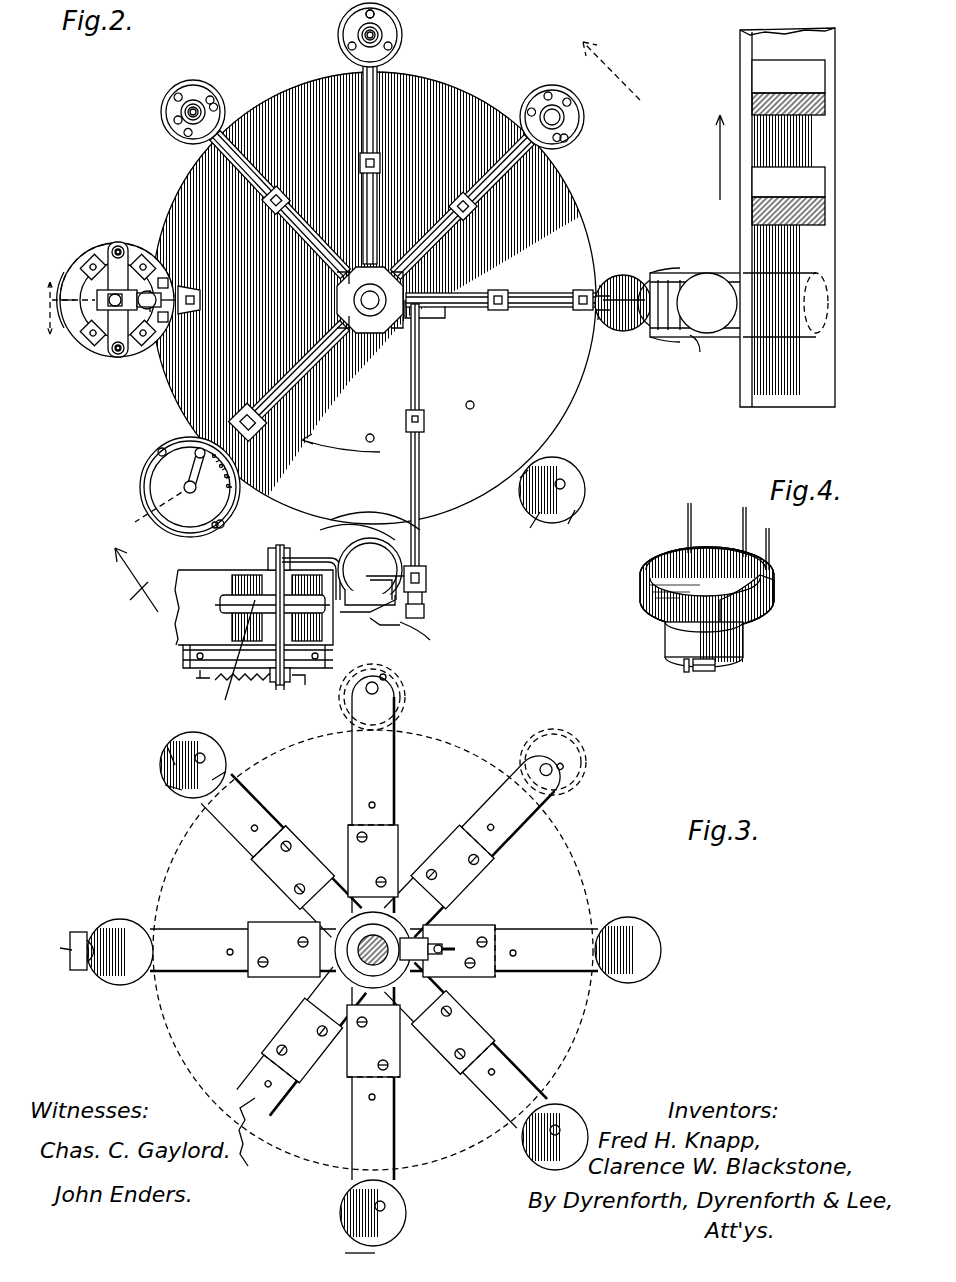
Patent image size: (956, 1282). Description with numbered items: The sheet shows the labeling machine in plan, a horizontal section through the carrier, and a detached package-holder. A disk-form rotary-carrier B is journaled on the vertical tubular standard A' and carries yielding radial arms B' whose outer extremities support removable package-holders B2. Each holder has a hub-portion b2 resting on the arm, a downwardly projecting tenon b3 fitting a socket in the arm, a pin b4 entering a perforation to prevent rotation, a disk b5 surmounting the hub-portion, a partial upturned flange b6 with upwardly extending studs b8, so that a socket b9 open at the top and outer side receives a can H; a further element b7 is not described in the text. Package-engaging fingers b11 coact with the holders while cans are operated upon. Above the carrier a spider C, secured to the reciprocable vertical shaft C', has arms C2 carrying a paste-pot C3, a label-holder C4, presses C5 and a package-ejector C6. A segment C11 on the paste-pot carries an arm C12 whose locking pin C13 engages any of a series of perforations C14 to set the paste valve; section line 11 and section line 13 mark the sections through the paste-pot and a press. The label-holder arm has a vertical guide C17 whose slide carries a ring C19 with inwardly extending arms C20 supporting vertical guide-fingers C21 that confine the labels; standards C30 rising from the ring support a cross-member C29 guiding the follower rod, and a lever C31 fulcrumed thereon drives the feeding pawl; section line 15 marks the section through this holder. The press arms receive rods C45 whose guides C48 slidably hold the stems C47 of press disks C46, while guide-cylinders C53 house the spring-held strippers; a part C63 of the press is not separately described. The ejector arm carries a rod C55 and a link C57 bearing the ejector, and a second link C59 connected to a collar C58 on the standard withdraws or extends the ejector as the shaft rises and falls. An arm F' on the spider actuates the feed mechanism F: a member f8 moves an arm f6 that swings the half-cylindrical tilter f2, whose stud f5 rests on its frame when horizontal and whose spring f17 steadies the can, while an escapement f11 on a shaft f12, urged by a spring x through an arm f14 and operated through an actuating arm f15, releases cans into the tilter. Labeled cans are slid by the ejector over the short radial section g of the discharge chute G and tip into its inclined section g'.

In FIG. 2, the rotary-carrier B is at (357, 297).
In FIG. 3, the rotary-carrier B is at (373, 928).
In FIG. 2, the radial arm B' is at (400, 524).
In FIG. 3, the radial arm B' is at (374, 927).
In FIG. 2, the package-holder B2 is at (376, 540).
In FIG. 4, the package-holder B2 is at (729, 584).
In FIG. 3, the package-holder B2 is at (172, 894).
In FIG. 2, the spider C is at (370, 274).
In FIG. 2, the reciprocable vertical shaft C' is at (356, 260).
In FIG. 3, the reciprocable vertical shaft C' is at (383, 907).
In FIG. 2, the spider arm C2 is at (445, 215).
In FIG. 2, the paste-pot C3 is at (148, 478).
In FIG. 2, the label-holder C4 is at (100, 352).
In FIG. 2, the press C5 is at (190, 80).
In FIG. 2, the package-ejector C6 is at (648, 285).
In FIG. 2, the segment C11 is at (228, 516).
In FIG. 2, the arm C12 is at (195, 452).
In FIG. 2, the locking pin C13 is at (238, 425).
In FIG. 2, the perforations C14 is at (240, 475).
In FIG. 2, the vertical guide C17 is at (200, 294).
In FIG. 2, the ring C19 is at (80, 262).
In FIG. 2, the inwardly extending arms C20 is at (152, 262).
In FIG. 2, the guide-fingers C21 is at (82, 296).
In FIG. 2, the cross-member C29 is at (148, 258).
In FIG. 2, the standards C30 is at (118, 246).
In FIG. 2, the lever C31 is at (165, 304).
In FIG. 2, the rod C45 is at (255, 178).
In FIG. 2, the press disk C46 is at (172, 100).
In FIG. 2, the stem C47 is at (182, 110).
In FIG. 2, the guide C48 is at (185, 123).
In FIG. 2, the guide-cylinder C53 is at (366, 18).
In FIG. 2, the removable rod C55 is at (540, 306).
In FIG. 2, the link C57 is at (620, 278).
In FIG. 3, the collar C58 is at (425, 935).
In FIG. 3, the link C59 is at (455, 958).
In FIG. 2, the bolt C63 is at (205, 95).
In FIG. 3, the tubular standard A' is at (356, 954).
In FIG. 2, the feed mechanism F is at (140, 600).
In FIG. 2, the arm F' is at (435, 517).
In FIG. 2, the discharge chute G is at (696, 228).
In FIG. 2, the radial section g is at (694, 353).
In FIG. 2, the inclined section g' is at (764, 232).
In FIG. 2, the can H is at (225, 630).
In FIG. 2, the tilter f2 is at (405, 622).
In FIG. 2, the stud f5 is at (415, 642).
In FIG. 2, the arm f6 is at (428, 606).
In FIG. 2, the member f8 is at (428, 578).
In FIG. 2, the escapement f11 is at (230, 662).
In FIG. 2, the shaft f12 is at (285, 548).
In FIG. 2, the arm f14 is at (285, 692).
In FIG. 2, the actuating arm f15 is at (320, 556).
In FIG. 2, the spring f17 is at (405, 555).
In FIG. 2, the spring x is at (275, 665).
In FIG. 4, the hub-portion b2 is at (728, 638).
In FIG. 4, the tenon b3 is at (708, 672).
In FIG. 4, the pin b4 is at (683, 665).
In FIG. 2, the disk b5 is at (577, 531).
In FIG. 4, the disk b5 is at (656, 612).
In FIG. 3, the disk b5 is at (178, 752).
In FIG. 2, the upturned flange b6 is at (568, 466).
In FIG. 4, the upturned flange b6 is at (770, 580).
In FIG. 3, the upturned flange b6 is at (162, 786).
In FIG. 2, the cup wall b7 is at (528, 530).
In FIG. 4, the cup wall b7 is at (668, 565).
In FIG. 3, the cup wall b7 is at (220, 760).
In FIG. 2, the studs b8 is at (590, 330).
In FIG. 4, the studs b8 is at (768, 545).
In FIG. 3, the studs b8 is at (375, 982).
In FIG. 2, the socket b9 is at (605, 328).
In FIG. 4, the socket b9 is at (650, 585).
In FIG. 3, the package-engaging fingers b11 is at (75, 940).
In FIG. 2, the section line 11 is at (611, 65).
In FIG. 2, the section line 13 is at (125, 580).
In FIG. 2, the section line 15 is at (64, 308).